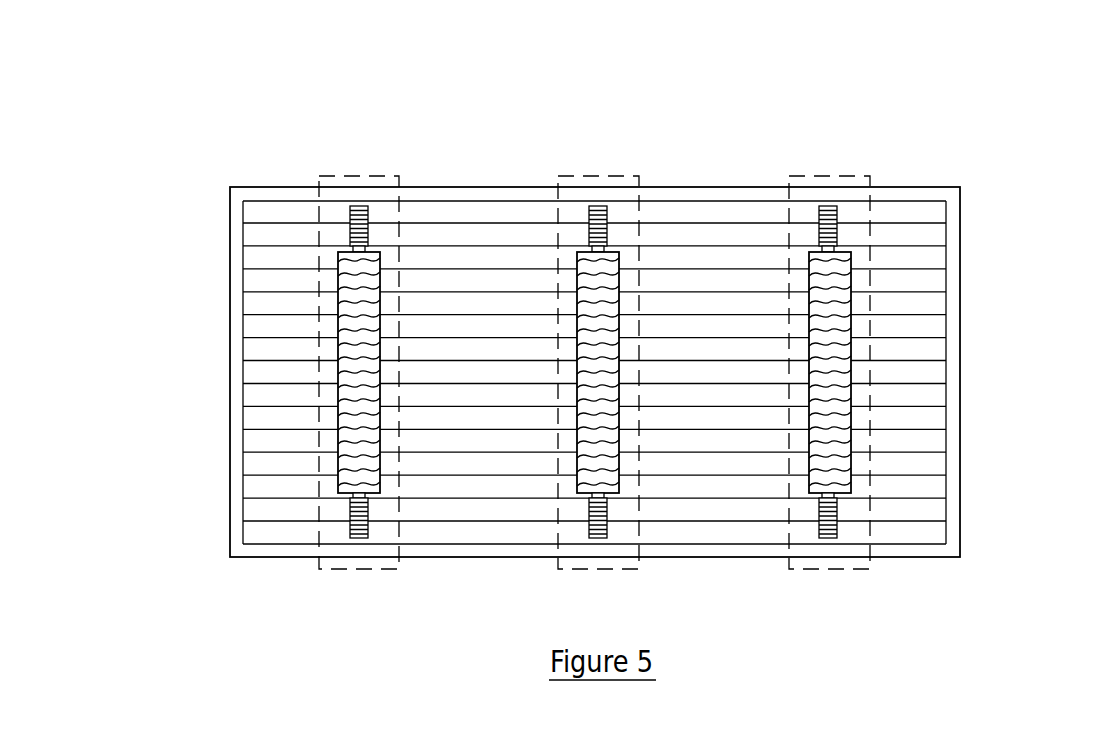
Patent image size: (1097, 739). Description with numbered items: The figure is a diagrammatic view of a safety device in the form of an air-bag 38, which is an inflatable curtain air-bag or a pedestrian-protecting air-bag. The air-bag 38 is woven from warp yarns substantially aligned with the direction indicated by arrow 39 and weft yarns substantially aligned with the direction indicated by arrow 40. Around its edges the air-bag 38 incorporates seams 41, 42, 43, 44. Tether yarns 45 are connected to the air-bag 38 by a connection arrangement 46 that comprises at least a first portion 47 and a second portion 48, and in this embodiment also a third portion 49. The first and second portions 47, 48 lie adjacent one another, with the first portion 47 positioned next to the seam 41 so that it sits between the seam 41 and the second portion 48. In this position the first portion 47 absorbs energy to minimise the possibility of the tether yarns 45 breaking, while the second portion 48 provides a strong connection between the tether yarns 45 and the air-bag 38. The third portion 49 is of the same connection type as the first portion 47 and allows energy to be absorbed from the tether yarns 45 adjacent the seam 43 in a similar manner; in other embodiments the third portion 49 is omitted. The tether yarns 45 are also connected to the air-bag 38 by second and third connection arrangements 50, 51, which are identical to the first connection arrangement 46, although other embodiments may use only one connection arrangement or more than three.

The air-bag 38 is at (698, 175).
The arrow 39 is at (908, 163).
The arrow 40 is at (208, 368).
The seam 41 is at (429, 192).
The seam 42 is at (235, 262).
The seam 43 is at (460, 552).
The seam 44 is at (950, 347).
The tether yarns 45 is at (492, 268).
The connection arrangement 46 is at (373, 177).
The first portion 47 is at (348, 232).
The second portion 48 is at (338, 392).
The third portion 49 is at (348, 512).
The second connection arrangement 50 is at (647, 398).
The third connection arrangement 51 is at (877, 400).